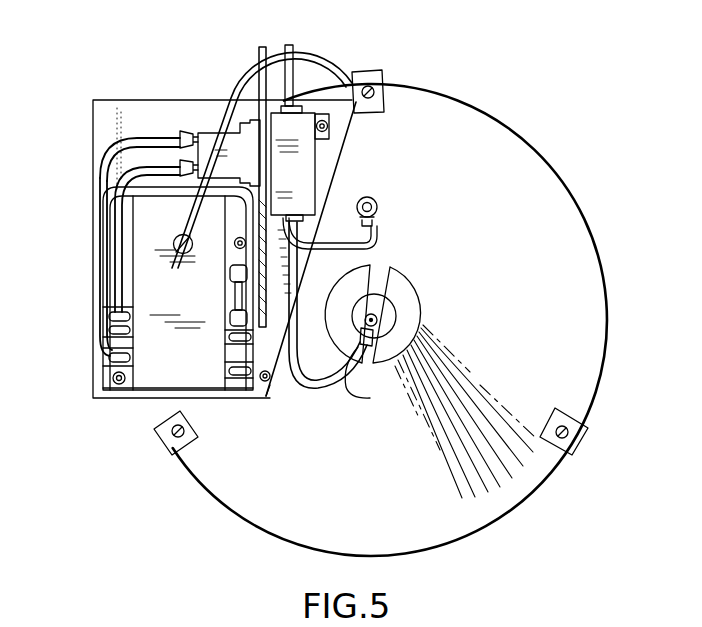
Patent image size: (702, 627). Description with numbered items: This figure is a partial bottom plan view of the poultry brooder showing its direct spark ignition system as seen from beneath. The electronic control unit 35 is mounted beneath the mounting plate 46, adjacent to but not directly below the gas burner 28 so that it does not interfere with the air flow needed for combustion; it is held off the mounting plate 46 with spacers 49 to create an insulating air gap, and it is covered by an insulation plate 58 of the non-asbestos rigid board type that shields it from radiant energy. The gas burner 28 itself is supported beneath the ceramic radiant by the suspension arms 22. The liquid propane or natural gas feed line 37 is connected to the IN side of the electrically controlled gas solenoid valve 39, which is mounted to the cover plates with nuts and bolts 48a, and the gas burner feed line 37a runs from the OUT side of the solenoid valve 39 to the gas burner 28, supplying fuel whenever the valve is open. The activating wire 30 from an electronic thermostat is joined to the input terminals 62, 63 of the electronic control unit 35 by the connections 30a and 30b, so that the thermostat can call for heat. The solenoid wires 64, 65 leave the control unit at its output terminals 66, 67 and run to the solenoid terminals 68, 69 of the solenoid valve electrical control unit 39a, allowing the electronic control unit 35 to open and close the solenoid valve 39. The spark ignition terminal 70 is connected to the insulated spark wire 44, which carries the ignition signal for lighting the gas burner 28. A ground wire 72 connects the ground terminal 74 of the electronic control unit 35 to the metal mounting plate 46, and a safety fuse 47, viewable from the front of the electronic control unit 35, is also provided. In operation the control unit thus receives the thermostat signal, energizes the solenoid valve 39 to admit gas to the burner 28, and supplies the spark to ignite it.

The suspension arms 22 is at (380, 78).
The gas burner 28 is at (380, 323).
The wire 30 is at (258, 57).
The connection 30a is at (273, 357).
The connection 30b is at (268, 366).
The electronic control unit 35 is at (148, 400).
The gas feed line 37 is at (295, 52).
The gas burner feed line 37a is at (371, 400).
The gas solenoid valve 39 is at (302, 172).
The solenoid valve electrical control unit 39a is at (205, 133).
The insulated spark wire 44 is at (333, 62).
The mounting plate 46 is at (590, 262).
The safety fuse 47 is at (230, 294).
The nuts and bolts 48a is at (330, 127).
The spacers 49 is at (234, 243).
The insulation plate 58 is at (107, 125).
The input terminal 62 is at (229, 337).
The input terminal 63 is at (239, 376).
The solenoid wire 64 is at (122, 184).
The solenoid wire 65 is at (121, 149).
The output terminal 66 is at (110, 331).
The output terminal 67 is at (104, 362).
The solenoid terminal 68 is at (185, 131).
The solenoid terminal 69 is at (181, 164).
The spark ignition terminal 70 is at (178, 251).
The ground wire 72 is at (382, 247).
The ground terminal 74 is at (109, 318).